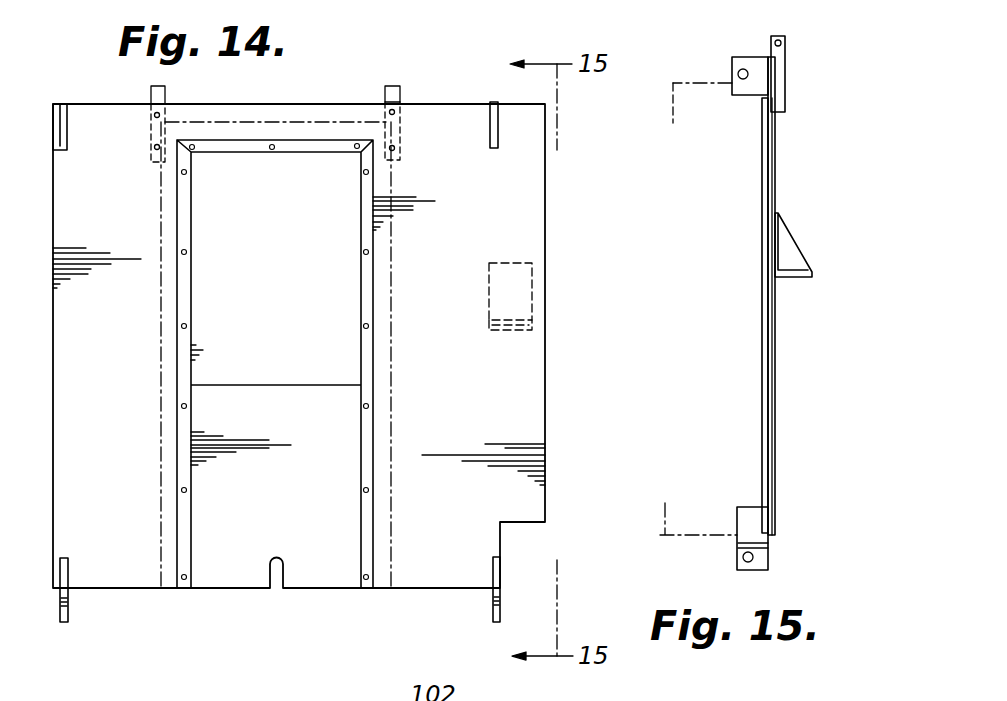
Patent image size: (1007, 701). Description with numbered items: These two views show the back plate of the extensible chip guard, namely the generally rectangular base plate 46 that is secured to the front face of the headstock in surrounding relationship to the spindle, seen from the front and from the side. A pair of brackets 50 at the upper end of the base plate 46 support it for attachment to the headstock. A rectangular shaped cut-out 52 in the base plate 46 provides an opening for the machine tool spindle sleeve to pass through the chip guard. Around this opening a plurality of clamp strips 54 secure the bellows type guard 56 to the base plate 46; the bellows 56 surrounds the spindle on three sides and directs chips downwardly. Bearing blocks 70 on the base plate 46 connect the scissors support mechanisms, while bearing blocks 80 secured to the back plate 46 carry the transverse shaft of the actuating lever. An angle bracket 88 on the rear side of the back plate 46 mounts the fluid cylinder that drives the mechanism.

In FIG. 14, the base plate 46 is at (522, 405).
In FIG. 15, the base plate 46 is at (777, 420).
In FIG. 14, the brackets 50 is at (168, 96).
In FIG. 15, the brackets 50 is at (780, 80).
In FIG. 15, the rectangular shaped cut-out 52 is at (773, 325).
In FIG. 14, the clamp strips 54 is at (265, 150).
In FIG. 15, the clamp strips 54 is at (763, 362).
In FIG. 14, the bellows type guard 56 is at (164, 202).
In FIG. 15, the bellows type guard 56 is at (697, 517).
In FIG. 14, the bearing blocks 70 is at (58, 152).
In FIG. 15, the bearing blocks 70 is at (740, 62).
In FIG. 14, the bearing blocks 80 is at (62, 622).
In FIG. 15, the bearing blocks 80 is at (760, 525).
In FIG. 14, the angle bracket 88 is at (520, 268).
In FIG. 15, the angle bracket 88 is at (792, 258).